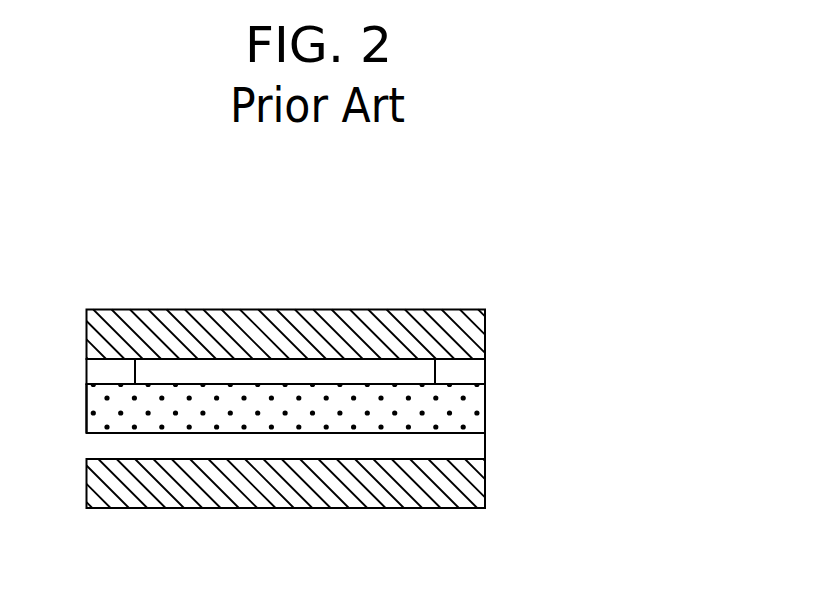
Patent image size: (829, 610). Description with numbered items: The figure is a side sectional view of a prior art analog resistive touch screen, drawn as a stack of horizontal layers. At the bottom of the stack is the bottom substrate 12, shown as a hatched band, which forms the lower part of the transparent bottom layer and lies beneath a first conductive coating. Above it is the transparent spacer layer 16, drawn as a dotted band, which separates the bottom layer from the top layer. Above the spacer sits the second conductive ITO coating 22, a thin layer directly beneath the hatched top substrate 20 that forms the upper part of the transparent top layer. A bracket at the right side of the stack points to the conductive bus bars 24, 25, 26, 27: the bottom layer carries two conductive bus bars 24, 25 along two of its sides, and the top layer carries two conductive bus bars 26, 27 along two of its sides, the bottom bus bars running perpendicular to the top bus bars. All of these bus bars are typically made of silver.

The bottom substrate 12 is at (485, 483).
The transparent spacer layer 16 is at (97, 417).
The top substrate 20 is at (485, 332).
The second conductive ITO coating 22 is at (235, 370).
The conductive bus bar 24 is at (485, 374).
The conductive bus bar 25 is at (368, 423).
The conductive bus bar 26 is at (393, 391).
The conductive bus bar 27 is at (409, 408).